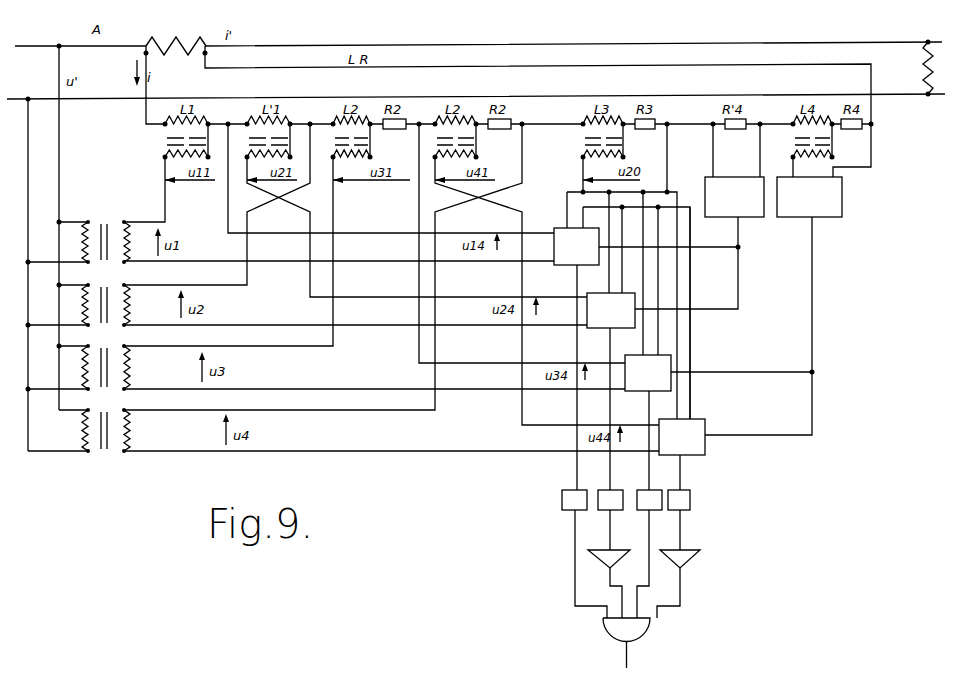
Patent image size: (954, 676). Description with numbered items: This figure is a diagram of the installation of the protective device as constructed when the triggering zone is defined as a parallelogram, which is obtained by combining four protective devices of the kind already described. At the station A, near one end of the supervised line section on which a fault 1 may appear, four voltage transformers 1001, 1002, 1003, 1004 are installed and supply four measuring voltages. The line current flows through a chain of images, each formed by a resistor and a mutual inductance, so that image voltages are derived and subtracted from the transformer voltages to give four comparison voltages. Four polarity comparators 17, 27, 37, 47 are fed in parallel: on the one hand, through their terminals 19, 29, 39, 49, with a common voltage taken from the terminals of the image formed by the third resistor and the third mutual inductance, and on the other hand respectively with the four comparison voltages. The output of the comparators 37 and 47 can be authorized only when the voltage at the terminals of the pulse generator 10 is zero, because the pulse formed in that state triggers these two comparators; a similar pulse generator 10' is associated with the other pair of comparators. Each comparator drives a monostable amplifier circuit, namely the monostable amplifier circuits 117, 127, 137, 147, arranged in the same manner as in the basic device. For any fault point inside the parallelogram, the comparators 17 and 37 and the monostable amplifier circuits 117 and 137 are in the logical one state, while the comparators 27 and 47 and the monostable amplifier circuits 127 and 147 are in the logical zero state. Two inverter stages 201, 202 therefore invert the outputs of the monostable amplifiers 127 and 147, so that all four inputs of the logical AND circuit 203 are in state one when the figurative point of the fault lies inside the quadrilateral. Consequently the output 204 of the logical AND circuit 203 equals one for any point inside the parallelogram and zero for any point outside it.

The fault 1 is at (922, 74).
The pulse generator 10 is at (809, 197).
The pulse generator 10' is at (734, 197).
The polarity comparator 17 is at (580, 256).
The polarity comparator 27 is at (614, 320).
The polarity comparator 37 is at (651, 382).
The polarity comparator 47 is at (685, 446).
The terminal 19 is at (582, 213).
The terminal 29 is at (621, 284).
The terminal 39 is at (657, 346).
The terminal 49 is at (689, 409).
The monostable amplifier circuit 117 is at (562, 492).
The monostable amplifier circuit 127 is at (600, 492).
The monostable amplifier circuit 137 is at (640, 492).
The monostable amplifier circuit 147 is at (683, 493).
The inverter stage 201 is at (600, 549).
The inverter stage 202 is at (687, 547).
The logical AND circuit 203 is at (634, 628).
The output 204 is at (629, 660).
The voltage transformer 1001 is at (78, 234).
The voltage transformer 1002 is at (78, 297).
The voltage transformer 1003 is at (78, 360).
The voltage transformer 1004 is at (79, 423).